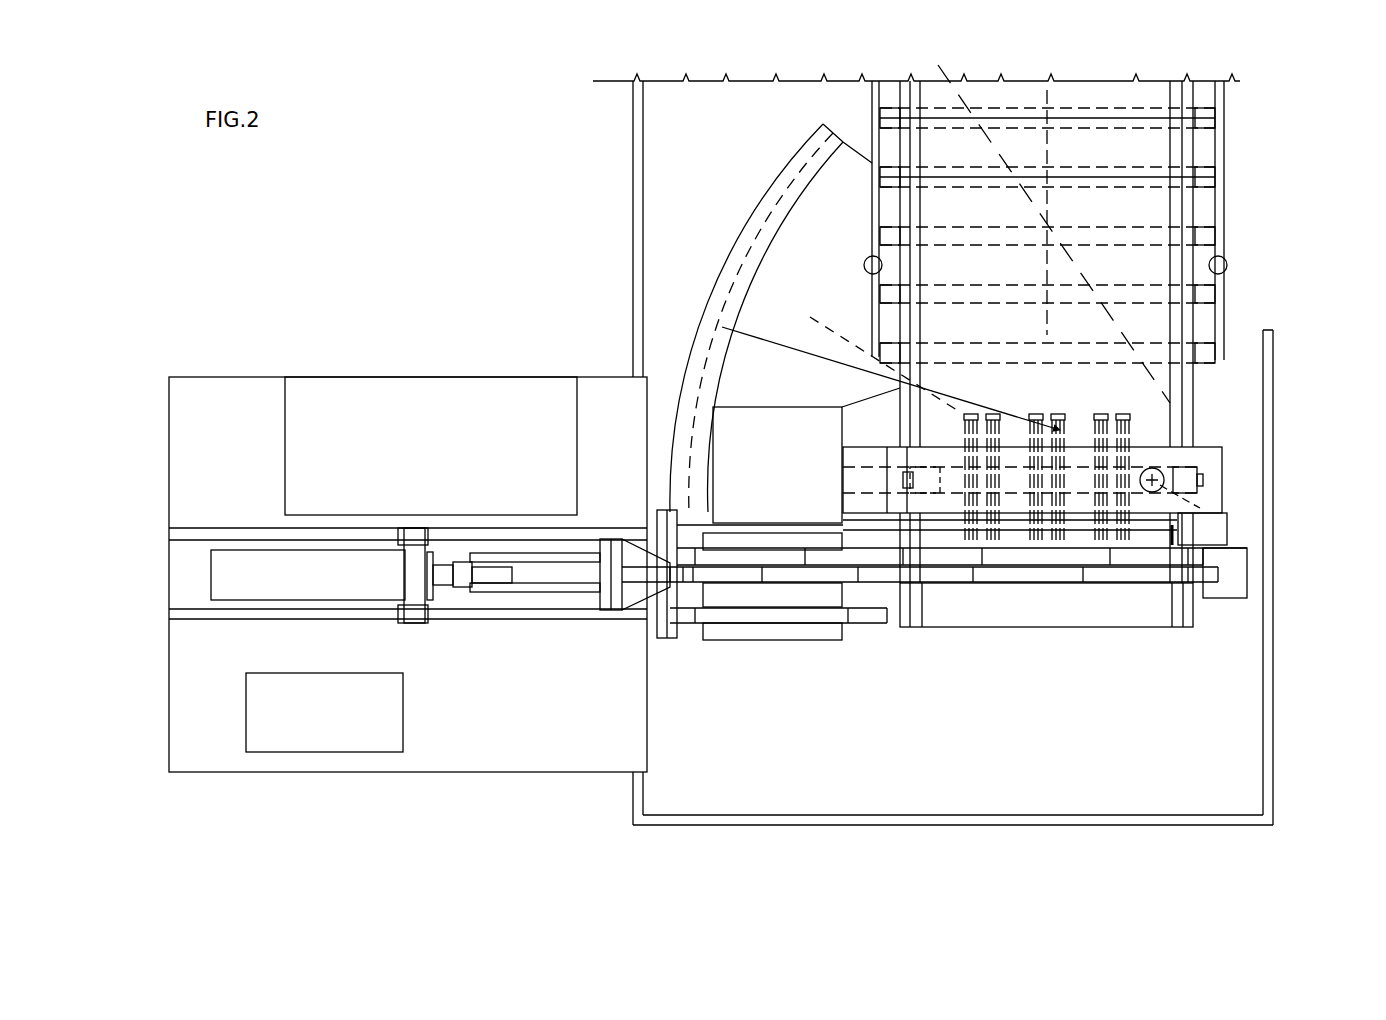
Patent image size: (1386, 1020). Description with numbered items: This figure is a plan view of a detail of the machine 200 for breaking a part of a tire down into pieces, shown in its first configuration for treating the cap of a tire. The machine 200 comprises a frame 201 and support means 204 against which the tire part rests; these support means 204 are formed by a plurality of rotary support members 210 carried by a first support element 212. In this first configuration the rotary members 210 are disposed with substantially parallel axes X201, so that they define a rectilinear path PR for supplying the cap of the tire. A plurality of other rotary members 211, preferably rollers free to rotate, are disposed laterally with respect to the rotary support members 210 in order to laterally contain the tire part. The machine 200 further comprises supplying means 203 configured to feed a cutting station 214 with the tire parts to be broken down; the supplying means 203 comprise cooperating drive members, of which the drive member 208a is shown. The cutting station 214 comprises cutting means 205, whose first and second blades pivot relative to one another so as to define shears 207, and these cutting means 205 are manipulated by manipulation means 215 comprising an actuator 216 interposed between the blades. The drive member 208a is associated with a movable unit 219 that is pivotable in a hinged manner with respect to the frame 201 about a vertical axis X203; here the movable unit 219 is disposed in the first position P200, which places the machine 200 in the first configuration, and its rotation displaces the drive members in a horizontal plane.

The machine 200 is at (1250, 311).
The frame 201 is at (548, 622).
The supplying means 203 is at (1084, 498).
The support means 204 is at (1122, 235).
The rotary support members 210 is at (1155, 286).
The cutting means 205 is at (1054, 574).
The shears 207 is at (934, 642).
The drive member 208a is at (1070, 428).
The other rotary members 211 is at (864, 265).
The first support element 212 is at (1232, 106).
The cutting station 214 is at (1006, 596).
The manipulation means 215 is at (534, 463).
The actuator 216 is at (456, 556).
The movable unit 219 is at (742, 396).
The first position P200 is at (793, 375).
The rectilinear path PR is at (1048, 203).
The axes of the rotary members X201 is at (916, 90).
The vertical axis X203 is at (1162, 486).